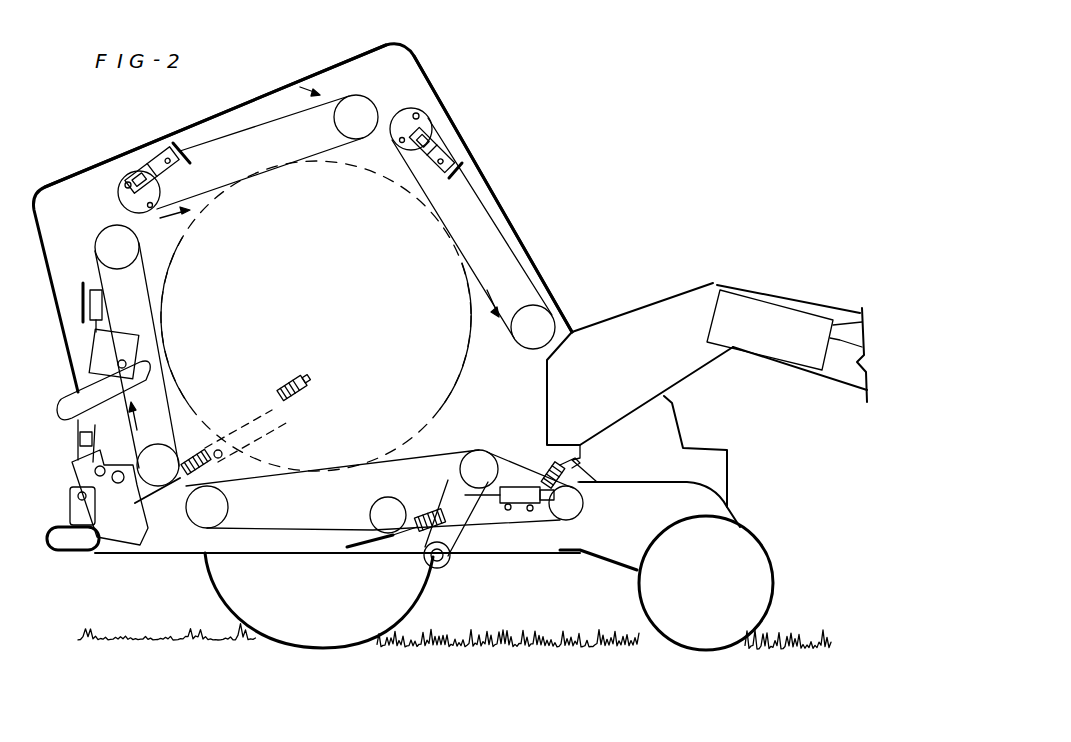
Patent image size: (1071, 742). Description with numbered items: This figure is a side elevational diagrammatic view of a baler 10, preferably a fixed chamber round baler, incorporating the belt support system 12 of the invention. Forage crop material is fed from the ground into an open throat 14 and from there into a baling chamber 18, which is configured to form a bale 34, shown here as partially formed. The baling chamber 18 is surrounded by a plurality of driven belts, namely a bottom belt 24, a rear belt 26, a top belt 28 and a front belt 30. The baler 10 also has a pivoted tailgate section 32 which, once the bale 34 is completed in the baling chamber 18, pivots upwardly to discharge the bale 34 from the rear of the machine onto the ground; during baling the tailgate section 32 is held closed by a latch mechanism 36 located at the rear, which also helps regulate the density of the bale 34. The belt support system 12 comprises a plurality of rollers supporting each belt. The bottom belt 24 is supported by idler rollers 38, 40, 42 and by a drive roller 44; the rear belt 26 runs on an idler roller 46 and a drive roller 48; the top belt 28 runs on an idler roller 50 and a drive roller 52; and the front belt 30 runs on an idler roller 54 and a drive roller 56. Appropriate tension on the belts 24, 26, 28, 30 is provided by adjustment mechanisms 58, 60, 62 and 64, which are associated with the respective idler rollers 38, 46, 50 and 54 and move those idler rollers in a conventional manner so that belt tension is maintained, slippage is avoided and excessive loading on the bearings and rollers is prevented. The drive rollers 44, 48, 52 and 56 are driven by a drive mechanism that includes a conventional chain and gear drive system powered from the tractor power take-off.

The baler 10 is at (530, 231).
The belt support system 12 is at (318, 93).
The open throat 14 is at (527, 382).
The baling chamber 18 is at (465, 229).
The belt 24 is at (390, 460).
The belt 26 is at (157, 317).
The belt 28 is at (282, 168).
The belt 30 is at (415, 172).
The tailgate section 32 is at (69, 168).
The bale 34 is at (470, 385).
The latch mechanism 36 is at (155, 533).
The idler roller 38 is at (584, 497).
The idler roller 40 is at (472, 467).
The idler roller 42 is at (380, 512).
The drive roller 44 is at (213, 507).
The idler roller 46 is at (197, 428).
The drive roller 48 is at (112, 236).
The idler roller 50 is at (120, 188).
The drive roller 52 is at (354, 110).
The idler roller 54 is at (400, 122).
The drive roller 56 is at (536, 322).
The adjustment mechanism 58 is at (525, 527).
The adjustment mechanism 60 is at (92, 372).
The adjustment mechanism 62 is at (150, 178).
The adjustment mechanism 64 is at (432, 142).